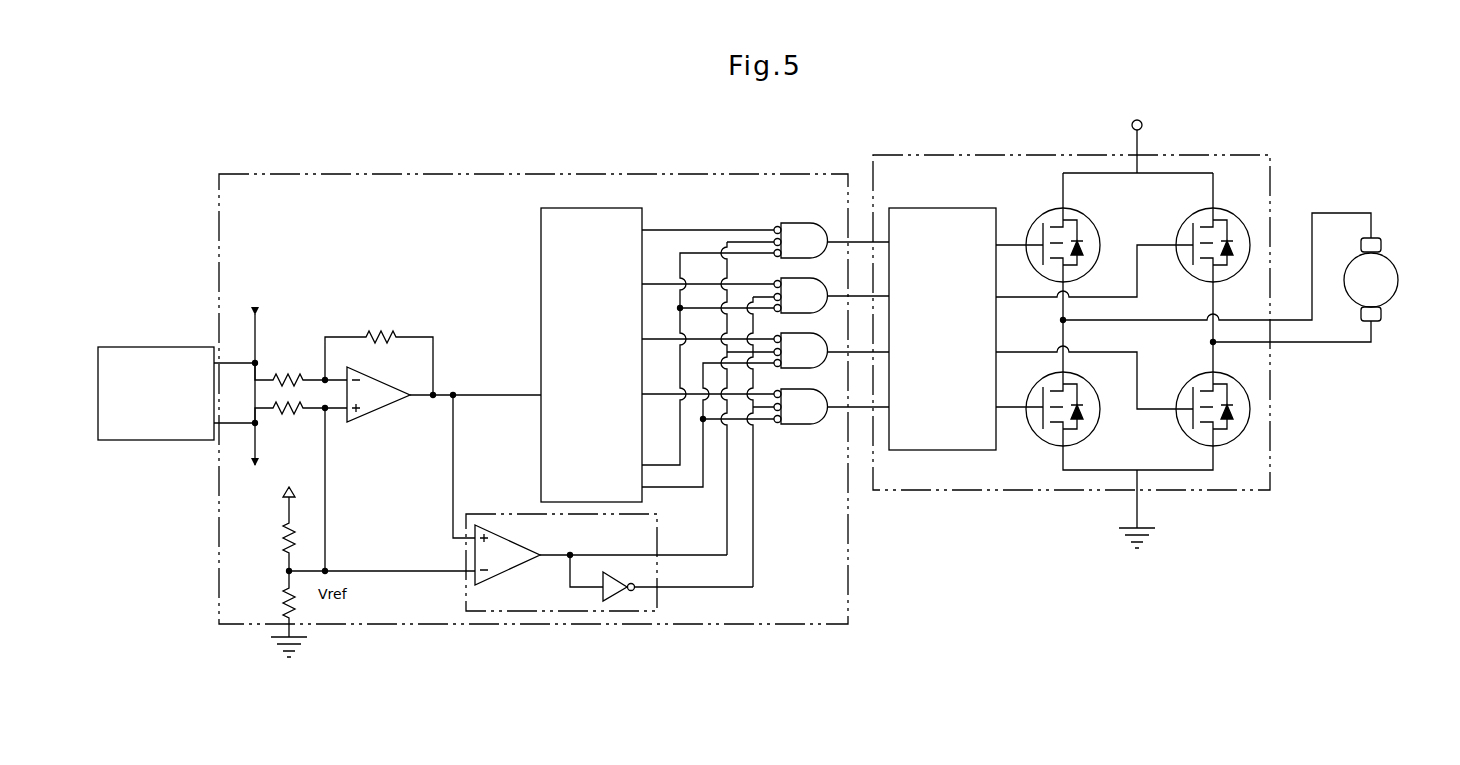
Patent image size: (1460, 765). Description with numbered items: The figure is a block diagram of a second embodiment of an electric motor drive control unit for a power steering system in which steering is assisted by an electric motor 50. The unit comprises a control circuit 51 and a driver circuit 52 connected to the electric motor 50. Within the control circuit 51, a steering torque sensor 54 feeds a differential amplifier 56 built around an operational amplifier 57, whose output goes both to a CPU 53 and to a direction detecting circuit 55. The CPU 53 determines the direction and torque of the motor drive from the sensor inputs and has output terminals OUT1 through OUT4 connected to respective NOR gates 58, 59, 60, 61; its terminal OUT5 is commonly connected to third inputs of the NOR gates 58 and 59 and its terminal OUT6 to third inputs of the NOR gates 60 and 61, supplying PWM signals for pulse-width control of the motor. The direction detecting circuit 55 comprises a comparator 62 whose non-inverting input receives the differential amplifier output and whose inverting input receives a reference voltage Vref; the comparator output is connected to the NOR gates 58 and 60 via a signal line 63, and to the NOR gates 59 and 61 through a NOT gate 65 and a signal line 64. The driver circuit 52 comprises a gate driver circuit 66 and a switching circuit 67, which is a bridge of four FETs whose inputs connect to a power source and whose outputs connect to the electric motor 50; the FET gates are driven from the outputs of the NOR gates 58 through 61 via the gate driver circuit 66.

The electric motor 50 is at (1400, 280).
The control circuit 51 is at (219, 207).
The driver circuit 52 is at (1272, 195).
The CPU 53 is at (541, 248).
The steering torque sensor 54 is at (164, 348).
The direction detecting circuit 55 is at (525, 518).
The differential amplifier 56 is at (370, 306).
The operational amplifier 57 is at (368, 408).
The NOR gate 58 is at (810, 226).
The NOR gate 59 is at (828, 286).
The NOR gate 60 is at (812, 334).
The NOR gate 61 is at (810, 391).
The comparator 62 is at (507, 560).
The signal line 63 is at (598, 555).
The signal line 64 is at (587, 590).
The NOT gate 65 is at (618, 592).
The gate driver circuit 66 is at (940, 208).
The switching circuit 67 is at (1027, 212).